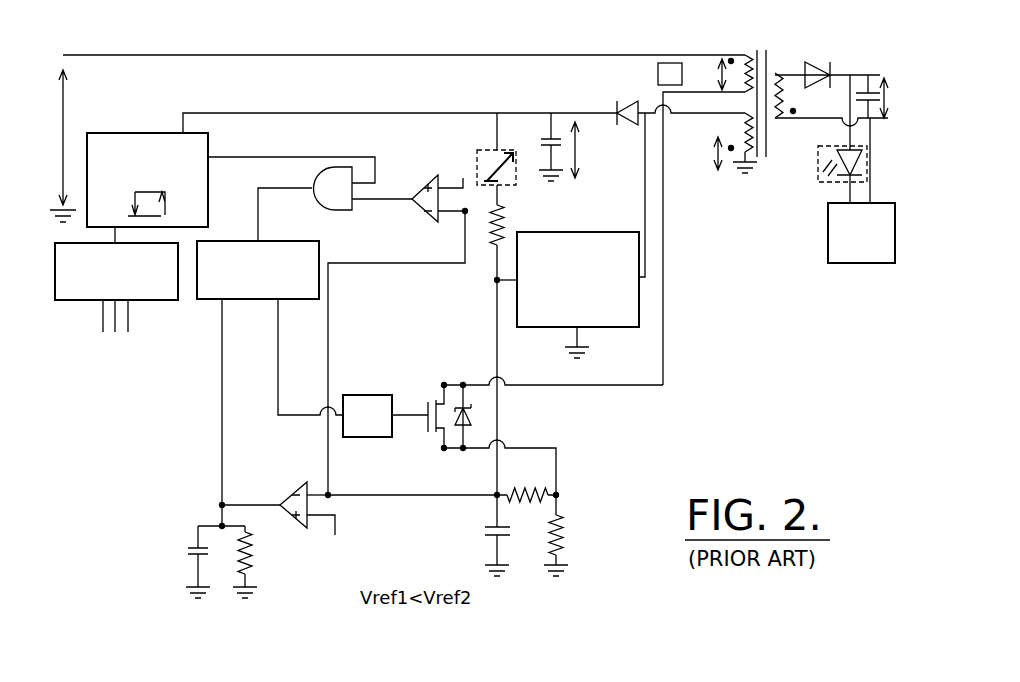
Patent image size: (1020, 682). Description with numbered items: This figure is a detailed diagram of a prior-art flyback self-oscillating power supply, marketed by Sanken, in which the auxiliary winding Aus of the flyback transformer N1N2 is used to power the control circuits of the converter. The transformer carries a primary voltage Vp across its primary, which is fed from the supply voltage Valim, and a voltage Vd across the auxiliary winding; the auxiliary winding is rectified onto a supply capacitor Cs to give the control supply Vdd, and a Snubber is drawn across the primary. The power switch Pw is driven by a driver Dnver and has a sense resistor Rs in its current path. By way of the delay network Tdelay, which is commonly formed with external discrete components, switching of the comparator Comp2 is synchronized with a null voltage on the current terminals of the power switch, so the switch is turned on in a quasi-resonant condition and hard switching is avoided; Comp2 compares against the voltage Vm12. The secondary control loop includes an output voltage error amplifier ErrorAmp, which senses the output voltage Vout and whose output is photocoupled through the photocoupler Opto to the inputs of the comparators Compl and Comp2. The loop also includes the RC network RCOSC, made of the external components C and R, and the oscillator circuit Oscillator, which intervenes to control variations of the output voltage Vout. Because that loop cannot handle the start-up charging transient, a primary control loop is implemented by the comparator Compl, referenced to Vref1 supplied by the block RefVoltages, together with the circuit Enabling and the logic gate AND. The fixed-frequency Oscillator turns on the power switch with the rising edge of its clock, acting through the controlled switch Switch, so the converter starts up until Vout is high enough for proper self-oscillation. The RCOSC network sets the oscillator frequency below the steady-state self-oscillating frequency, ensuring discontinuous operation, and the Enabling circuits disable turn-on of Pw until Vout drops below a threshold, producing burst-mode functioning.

The supply voltage Valim is at (83, 146).
The enabling circuits Enabling is at (147, 180).
The reference voltages block RefVoltages is at (116, 287).
The fixed frequency oscillator Oscillator is at (258, 270).
The logic AND gate AND is at (335, 201).
The comparator COMP1 Compl is at (426, 211).
The reference voltage 1 Vref1 is at (435, 170).
The comparator COMP2 Comp2 is at (269, 497).
The voltage Vm12 is at (346, 540).
The RC OSC network RCOSC is at (197, 546).
The capacitor C is at (205, 562).
The resistor R is at (251, 562).
The controlled switch Switch is at (496, 167).
The delay network Tdelay is at (578, 295).
The supply capacitor Cs is at (541, 134).
The supply voltage Vdd is at (594, 150).
The snubber Snubber is at (624, 74).
The transformer N1:N2 N1N2 is at (739, 89).
The primary voltage Vp is at (707, 74).
The auxiliary winding Aus is at (684, 130).
The auxiliary voltage Vd is at (705, 154).
The output voltage Vout is at (894, 96).
The photodiode and phototransistor Opto is at (842, 174).
The output voltage error amplifier ErrorAmp is at (861, 233).
The driver Dnver is at (369, 404).
The power switch Pw is at (431, 412).
The sense resistor Rs is at (568, 535).